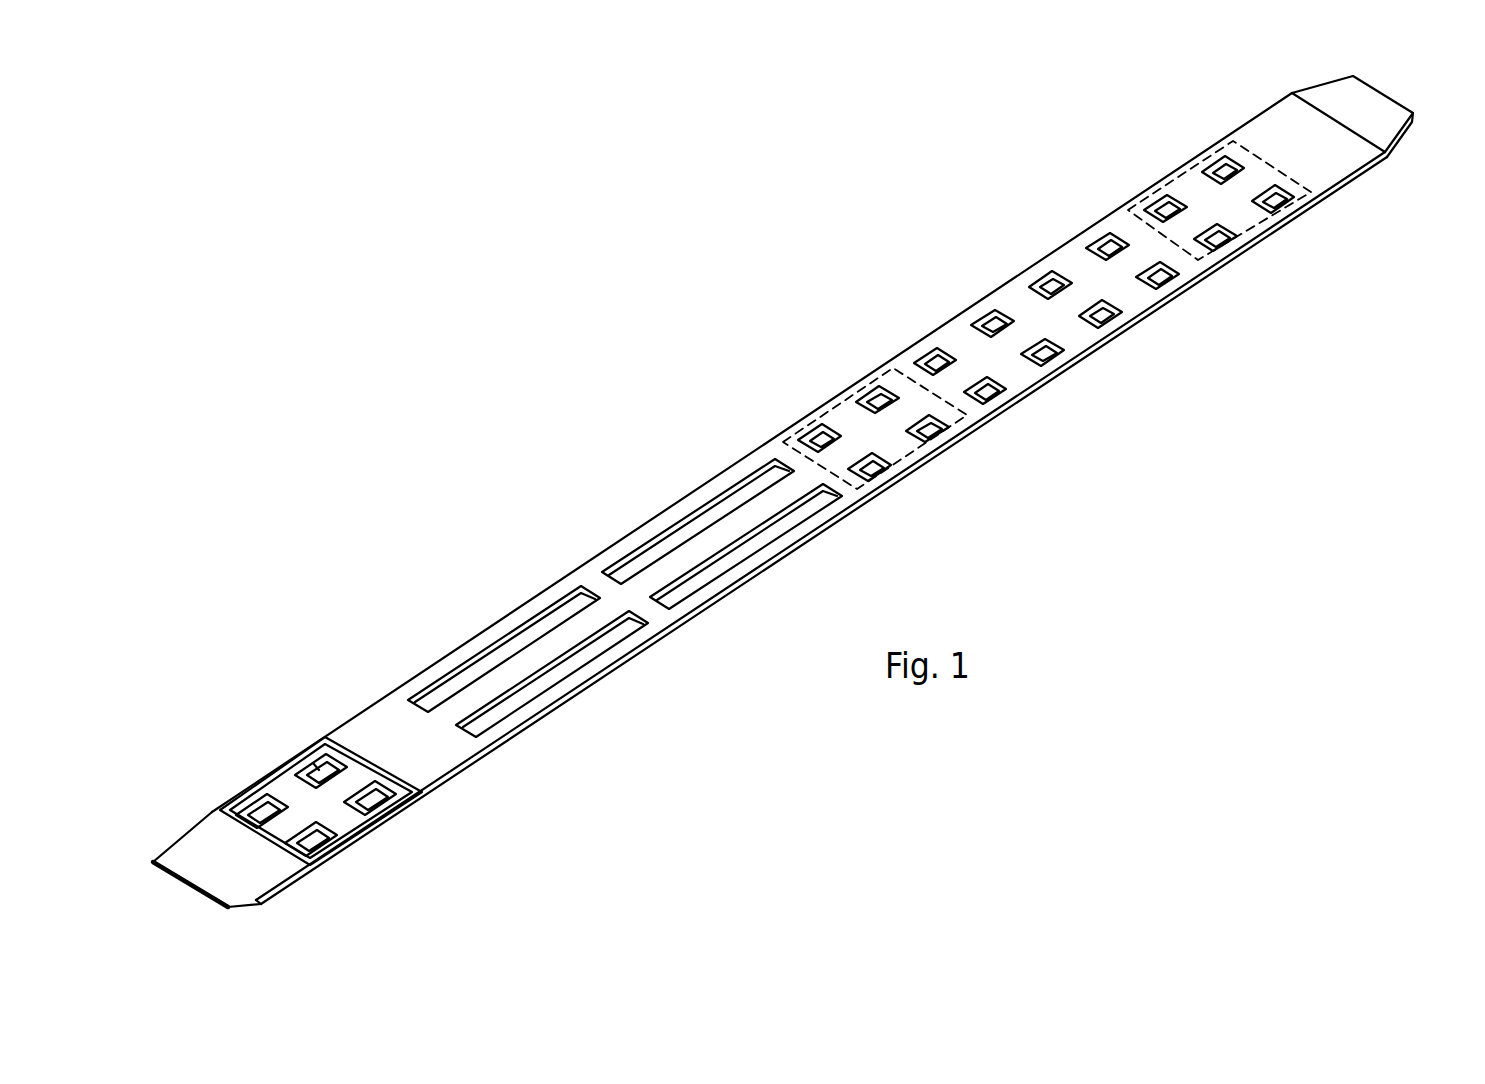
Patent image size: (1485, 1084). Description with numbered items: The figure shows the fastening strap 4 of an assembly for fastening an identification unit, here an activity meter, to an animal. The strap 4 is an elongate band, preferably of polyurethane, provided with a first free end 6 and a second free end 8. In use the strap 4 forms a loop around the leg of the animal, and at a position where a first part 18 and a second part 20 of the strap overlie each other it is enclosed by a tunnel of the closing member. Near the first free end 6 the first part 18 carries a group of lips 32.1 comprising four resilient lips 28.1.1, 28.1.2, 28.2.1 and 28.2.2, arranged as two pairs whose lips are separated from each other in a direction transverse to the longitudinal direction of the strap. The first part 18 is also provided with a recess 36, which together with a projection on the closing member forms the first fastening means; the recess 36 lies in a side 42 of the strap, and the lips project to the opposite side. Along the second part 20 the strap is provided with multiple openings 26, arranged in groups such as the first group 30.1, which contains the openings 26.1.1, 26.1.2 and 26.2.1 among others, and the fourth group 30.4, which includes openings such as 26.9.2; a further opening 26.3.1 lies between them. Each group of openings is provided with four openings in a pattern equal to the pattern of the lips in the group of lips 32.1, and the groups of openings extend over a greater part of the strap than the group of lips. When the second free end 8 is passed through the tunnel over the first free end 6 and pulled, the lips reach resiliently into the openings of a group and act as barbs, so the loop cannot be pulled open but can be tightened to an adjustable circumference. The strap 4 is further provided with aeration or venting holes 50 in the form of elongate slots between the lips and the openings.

The fastening strap 4 is at (781, 514).
The first free end 6 is at (190, 863).
The second free end 8 is at (1337, 162).
The first part 18 is at (352, 800).
The second part 20 is at (1089, 297).
The openings 26 is at (1108, 250).
The opening 26.1.1 is at (1276, 202).
The opening 26.1.2 is at (1226, 174).
The opening 26.2.1 is at (1218, 240).
The opening 26.3.1 is at (1162, 282).
The opening 26.9.2 is at (823, 441).
The resilient lip 28.1.1 is at (370, 803).
The resilient lip 28.1.2 is at (305, 758).
The resilient lip 28.2.1 is at (312, 843).
The resilient lip 28.2.2 is at (263, 817).
The group of openings 30.1 is at (1150, 197).
The group of openings 30.4 is at (923, 447).
The group of lips 32.1 is at (313, 763).
The recess 36 is at (413, 808).
The side 42 is at (413, 770).
The aeration or venting holes 50 is at (700, 525).